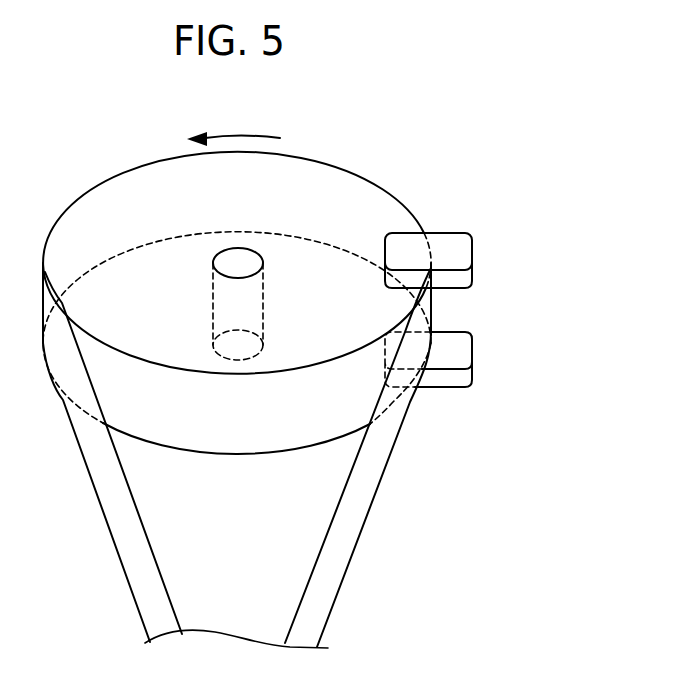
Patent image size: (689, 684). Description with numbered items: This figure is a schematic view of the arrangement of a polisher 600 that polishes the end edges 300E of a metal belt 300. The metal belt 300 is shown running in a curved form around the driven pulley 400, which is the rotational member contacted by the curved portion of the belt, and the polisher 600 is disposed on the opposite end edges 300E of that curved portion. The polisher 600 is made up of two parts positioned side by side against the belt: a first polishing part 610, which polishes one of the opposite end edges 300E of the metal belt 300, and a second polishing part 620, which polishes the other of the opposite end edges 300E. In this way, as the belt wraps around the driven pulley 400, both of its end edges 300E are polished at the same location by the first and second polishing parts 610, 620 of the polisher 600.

The metal belt 300 is at (261, 458).
The end edges of the metal belt 300E is at (332, 522).
The driven pulley 400 is at (302, 178).
The polisher 600 is at (511, 308).
The first polishing part 610 is at (458, 257).
The second polishing part 620 is at (477, 359).